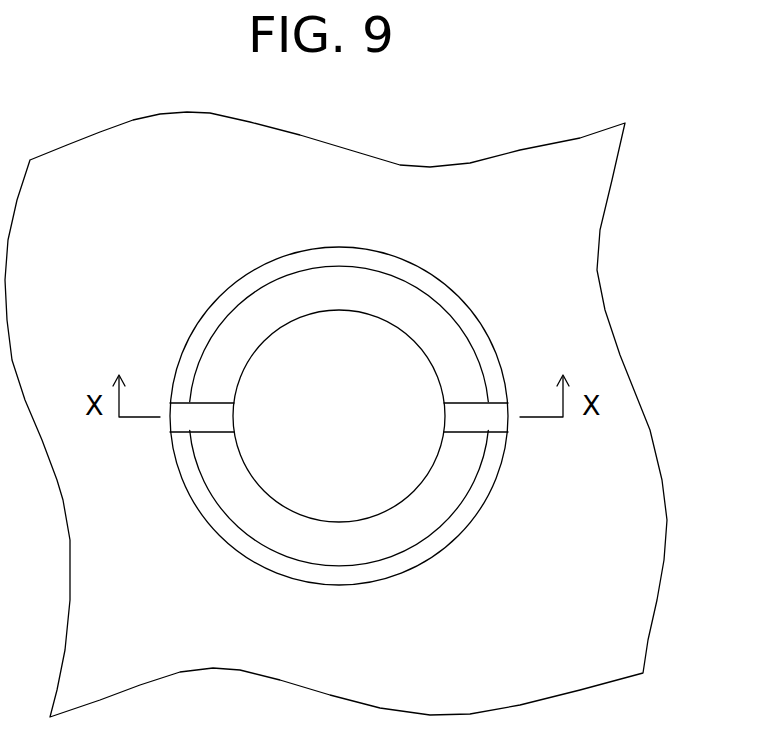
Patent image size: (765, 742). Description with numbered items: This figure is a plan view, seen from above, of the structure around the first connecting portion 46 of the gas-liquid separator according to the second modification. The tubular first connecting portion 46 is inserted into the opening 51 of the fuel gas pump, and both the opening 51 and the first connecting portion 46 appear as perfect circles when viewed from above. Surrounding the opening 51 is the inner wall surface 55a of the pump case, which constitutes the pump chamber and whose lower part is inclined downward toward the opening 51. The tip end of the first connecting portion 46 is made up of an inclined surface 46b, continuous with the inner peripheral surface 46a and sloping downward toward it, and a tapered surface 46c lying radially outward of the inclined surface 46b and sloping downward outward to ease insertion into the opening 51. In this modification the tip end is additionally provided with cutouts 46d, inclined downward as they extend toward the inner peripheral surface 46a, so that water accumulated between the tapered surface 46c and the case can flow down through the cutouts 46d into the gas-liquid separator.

The opening 51 is at (417, 334).
The first connecting portion 46 is at (417, 408).
The inner peripheral surface 46a is at (339, 416).
The inclined surface 46b is at (464, 416).
The tapered surface 46c is at (453, 416).
The cutouts 46d is at (340, 448).
The inner wall surface 55a is at (345, 414).